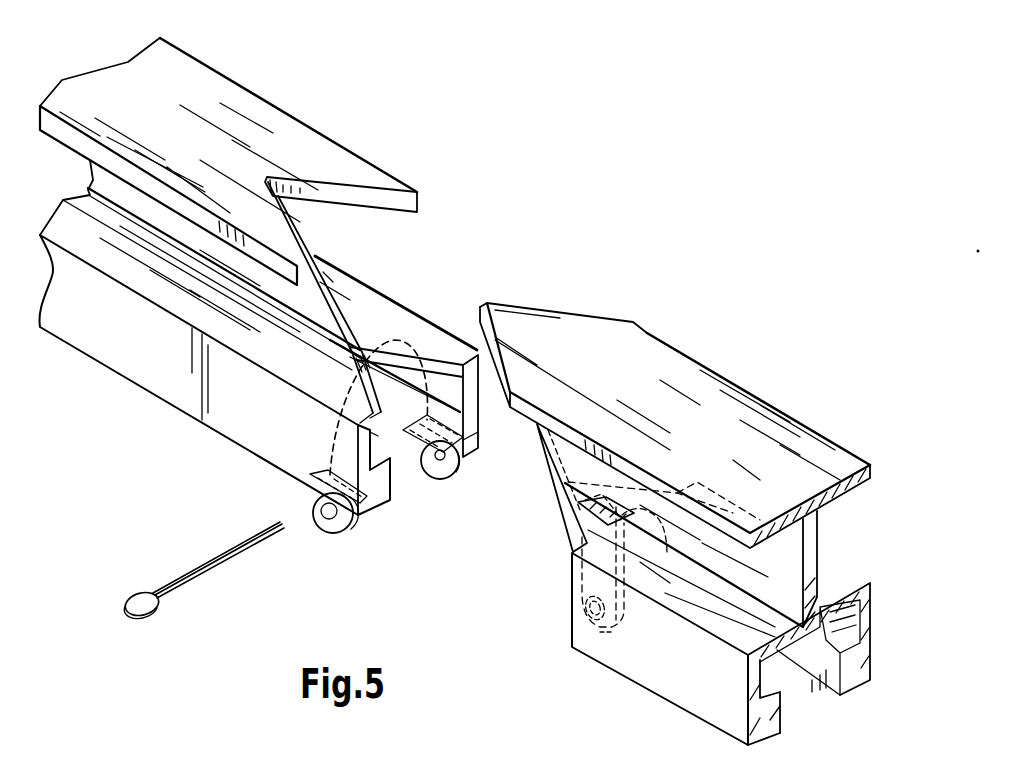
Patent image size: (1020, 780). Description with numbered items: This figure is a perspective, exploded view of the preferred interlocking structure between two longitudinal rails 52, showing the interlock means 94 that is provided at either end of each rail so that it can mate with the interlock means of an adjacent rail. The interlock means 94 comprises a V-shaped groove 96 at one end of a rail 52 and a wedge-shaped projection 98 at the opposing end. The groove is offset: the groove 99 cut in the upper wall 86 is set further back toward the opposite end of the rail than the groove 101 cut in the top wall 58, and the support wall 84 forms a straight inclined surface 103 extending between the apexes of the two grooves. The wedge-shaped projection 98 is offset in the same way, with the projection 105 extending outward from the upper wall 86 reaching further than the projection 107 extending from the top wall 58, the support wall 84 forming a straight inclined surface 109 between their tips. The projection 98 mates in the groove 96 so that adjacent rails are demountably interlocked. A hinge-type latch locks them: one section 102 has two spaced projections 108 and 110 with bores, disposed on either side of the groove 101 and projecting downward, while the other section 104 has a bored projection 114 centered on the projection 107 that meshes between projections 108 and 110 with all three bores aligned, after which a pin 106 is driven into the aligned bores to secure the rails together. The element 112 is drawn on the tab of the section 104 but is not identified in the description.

The longitudinal rail 52 is at (212, 108).
The top wall 58 is at (152, 275).
The support wall 84 is at (118, 192).
The upper wall 86 is at (145, 97).
The interlock means 94 is at (514, 247).
The V-shaped groove 96 is at (406, 231).
The wedge-shaped projection 98 is at (524, 478).
The groove in upper wall 99 is at (333, 178).
The groove in top wall 101 is at (355, 347).
The latch section 102 is at (396, 530).
The inclined surface 103 is at (330, 272).
The latch section 104 is at (560, 528).
The projection from upper wall 105 is at (547, 340).
The pin 106 is at (183, 590).
The projection from top wall 107 is at (530, 634).
The projection with bore 108 is at (433, 463).
The inclined surface 109 is at (492, 448).
The projection with bore 110 is at (315, 508).
The slotted tab 112 is at (665, 537).
The projection with bore 114 is at (607, 633).